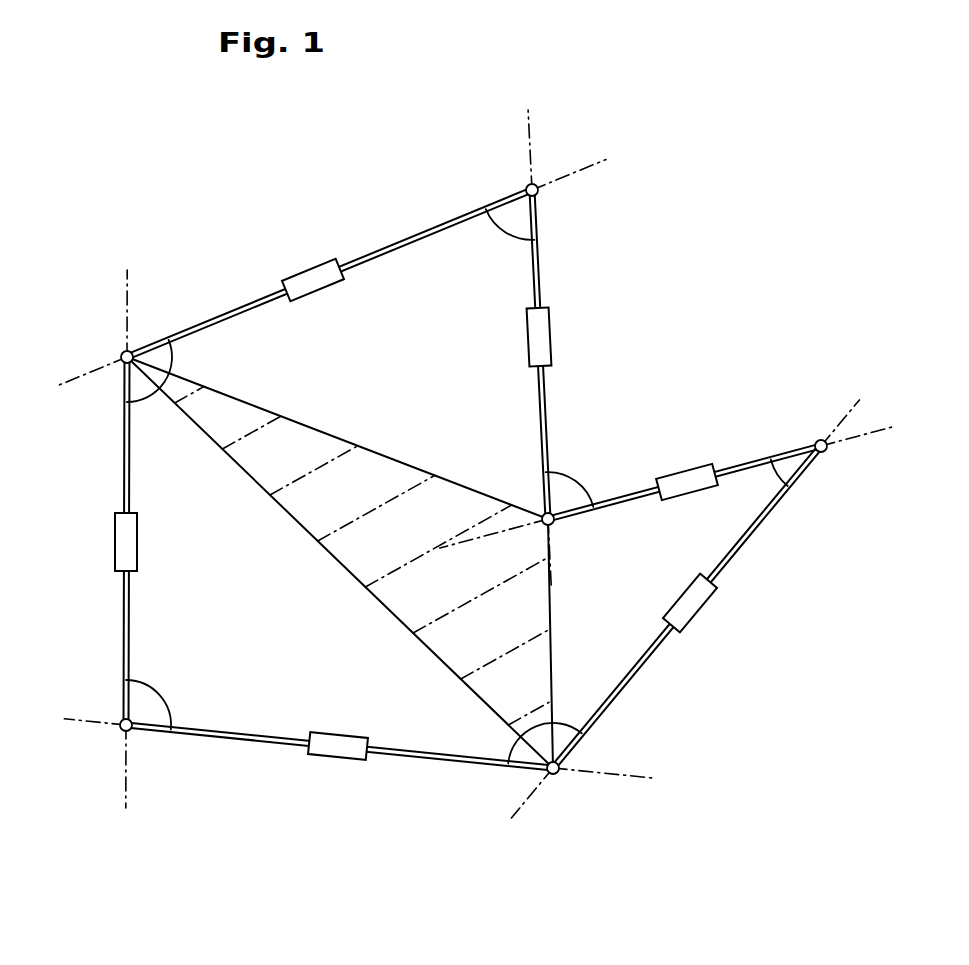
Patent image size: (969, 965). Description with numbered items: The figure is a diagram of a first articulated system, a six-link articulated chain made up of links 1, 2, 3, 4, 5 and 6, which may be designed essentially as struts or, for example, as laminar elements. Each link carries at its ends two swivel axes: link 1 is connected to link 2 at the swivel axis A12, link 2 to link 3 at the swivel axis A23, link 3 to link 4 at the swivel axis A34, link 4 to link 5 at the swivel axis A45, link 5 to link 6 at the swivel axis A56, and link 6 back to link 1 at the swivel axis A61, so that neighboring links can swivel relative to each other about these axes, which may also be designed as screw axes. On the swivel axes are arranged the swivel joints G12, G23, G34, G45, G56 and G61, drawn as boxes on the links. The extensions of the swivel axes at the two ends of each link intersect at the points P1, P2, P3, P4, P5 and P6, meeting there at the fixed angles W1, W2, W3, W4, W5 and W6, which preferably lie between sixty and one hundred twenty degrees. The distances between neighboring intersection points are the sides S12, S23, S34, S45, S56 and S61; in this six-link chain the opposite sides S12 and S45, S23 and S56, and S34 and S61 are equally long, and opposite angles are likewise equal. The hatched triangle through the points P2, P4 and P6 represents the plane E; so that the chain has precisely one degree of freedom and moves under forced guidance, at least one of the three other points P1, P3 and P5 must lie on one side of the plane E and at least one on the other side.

The link 1 is at (329, 257).
The link 2 is at (551, 354).
The link 3 is at (684, 457).
The link 4 is at (687, 606).
The link 5 is at (340, 772).
The link 6 is at (87, 541).
The side S61 is at (388, 249).
The side S12 is at (539, 277).
The side S23 is at (742, 466).
The side S34 is at (750, 540).
The side S45 is at (440, 771).
The side S56 is at (120, 622).
The swivel joint G61 is at (310, 278).
The swivel joint G12 is at (556, 338).
The swivel joint G23 is at (680, 477).
The swivel joint G34 is at (712, 612).
The swivel joint G45 is at (333, 762).
The swivel joint G56 is at (115, 552).
The point of intersection P1 is at (548, 196).
The point of intersection P2 is at (553, 524).
The point of intersection P3 is at (826, 453).
The point of intersection P4 is at (551, 774).
The point of intersection P5 is at (121, 732).
The point of intersection P6 is at (121, 352).
The angle W1 is at (505, 228).
The angle W2 is at (573, 482).
The angle W3 is at (772, 480).
The angle W4 is at (563, 727).
The angle W5 is at (160, 698).
The angle W6 is at (168, 360).
The swivel axis A12 is at (537, 112).
The swivel axis A23 is at (485, 528).
The swivel axis A34 is at (852, 402).
The swivel axis A45 is at (627, 772).
The swivel axis A56 is at (128, 792).
The swivel axis A61 is at (77, 387).
The plane E is at (317, 528).